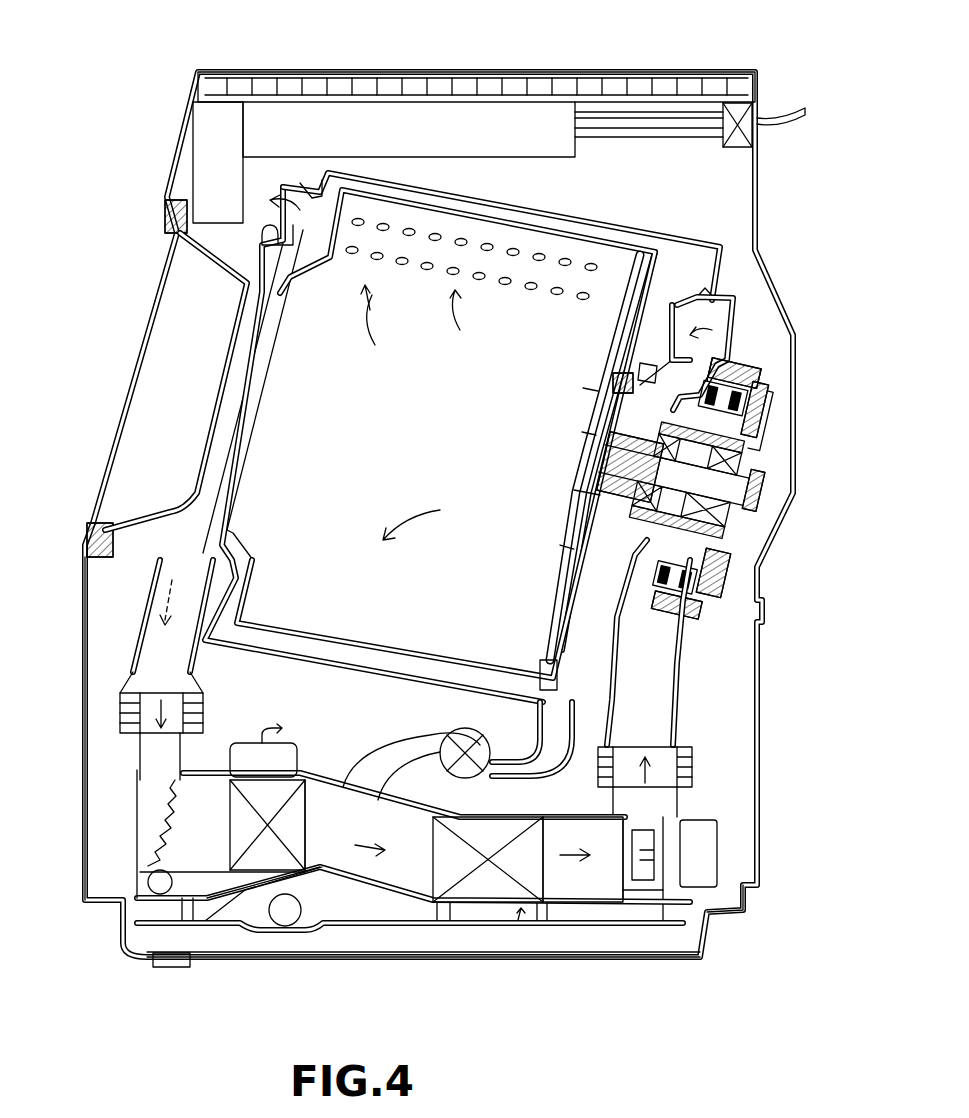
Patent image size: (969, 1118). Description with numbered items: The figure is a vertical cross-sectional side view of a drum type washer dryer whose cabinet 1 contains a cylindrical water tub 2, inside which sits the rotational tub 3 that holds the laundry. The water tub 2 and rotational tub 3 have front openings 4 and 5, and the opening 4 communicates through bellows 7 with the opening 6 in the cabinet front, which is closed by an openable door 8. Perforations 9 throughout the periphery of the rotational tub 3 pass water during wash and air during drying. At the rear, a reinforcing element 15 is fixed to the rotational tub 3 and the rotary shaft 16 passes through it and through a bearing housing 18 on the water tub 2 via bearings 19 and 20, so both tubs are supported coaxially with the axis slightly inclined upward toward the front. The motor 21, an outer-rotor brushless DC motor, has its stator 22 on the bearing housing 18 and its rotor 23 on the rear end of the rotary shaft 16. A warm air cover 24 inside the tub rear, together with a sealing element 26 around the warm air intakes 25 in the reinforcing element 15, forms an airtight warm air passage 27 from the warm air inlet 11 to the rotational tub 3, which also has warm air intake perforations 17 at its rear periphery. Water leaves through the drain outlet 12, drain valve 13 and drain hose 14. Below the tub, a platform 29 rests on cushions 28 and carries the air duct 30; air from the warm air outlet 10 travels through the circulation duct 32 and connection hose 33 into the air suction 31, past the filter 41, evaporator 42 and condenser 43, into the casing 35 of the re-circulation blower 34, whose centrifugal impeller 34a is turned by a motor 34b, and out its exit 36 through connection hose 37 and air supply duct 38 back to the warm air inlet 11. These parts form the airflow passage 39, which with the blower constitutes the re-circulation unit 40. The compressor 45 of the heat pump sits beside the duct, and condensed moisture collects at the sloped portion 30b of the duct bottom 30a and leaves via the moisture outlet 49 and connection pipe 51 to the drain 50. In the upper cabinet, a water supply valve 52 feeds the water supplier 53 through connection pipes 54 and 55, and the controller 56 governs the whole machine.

The cabinet 1 is at (758, 140).
The water tub 2 is at (612, 240).
The rotational tub 3 is at (485, 220).
The opening 4 is at (252, 387).
The opening 5 is at (262, 447).
The opening 6 is at (178, 236).
The bellows 7 is at (272, 225).
The door 8 is at (140, 374).
The perforations 9 is at (427, 266).
The warm air outlet 10 is at (290, 190).
The warm air inlet 11 is at (740, 318).
The drain outlet 12 is at (560, 720).
The drain valve 13 is at (482, 765).
The drain hose 14 is at (385, 770).
The reinforcing element 15 is at (645, 360).
The rotary shaft 16 is at (745, 494).
The warm air intake perforations 17 is at (600, 412).
The bearing housing 18 is at (755, 450).
The bearing 19 is at (728, 558).
The bearing 20 is at (725, 545).
The motor 21 is at (776, 400).
The stator 22 is at (763, 378).
The rotor 23 is at (758, 365).
The warm air cover 24 is at (712, 278).
The warm air intakes 25 is at (590, 432).
The sealing element 26 is at (615, 375).
The warm air passage 27 is at (648, 362).
The cushions 28 is at (123, 950).
The platform 29 is at (452, 903).
The air duct 30 is at (500, 895).
The bottom 30a is at (130, 898).
The portion 30b is at (232, 875).
The air suction 31 is at (150, 752).
The circulation duct 32 is at (135, 655).
The connection hose 33 is at (122, 700).
The re-circulation blower 34 is at (577, 905).
The centrifugal impeller 34a is at (712, 912).
The motor 34b is at (717, 858).
The casing 35 is at (655, 912).
The exit 36 is at (670, 807).
The connection hose 37 is at (695, 763).
The air supply duct 38 is at (690, 643).
The airflow passage 39 is at (560, 920).
The re-circulation unit 40 is at (375, 905).
The filter 41 is at (140, 822).
The evaporator 42 is at (222, 862).
The condenser 43 is at (497, 960).
The compressor 45 is at (252, 745).
The moisture outlet 49 is at (148, 880).
The drain 50 is at (290, 925).
The connection pipe 51 is at (257, 895).
The water supply valve 52 is at (740, 105).
The water supplier 53 is at (410, 105).
The connection pipe 54 is at (625, 115).
The connection pipe 55 is at (686, 125).
The controller 56 is at (243, 125).